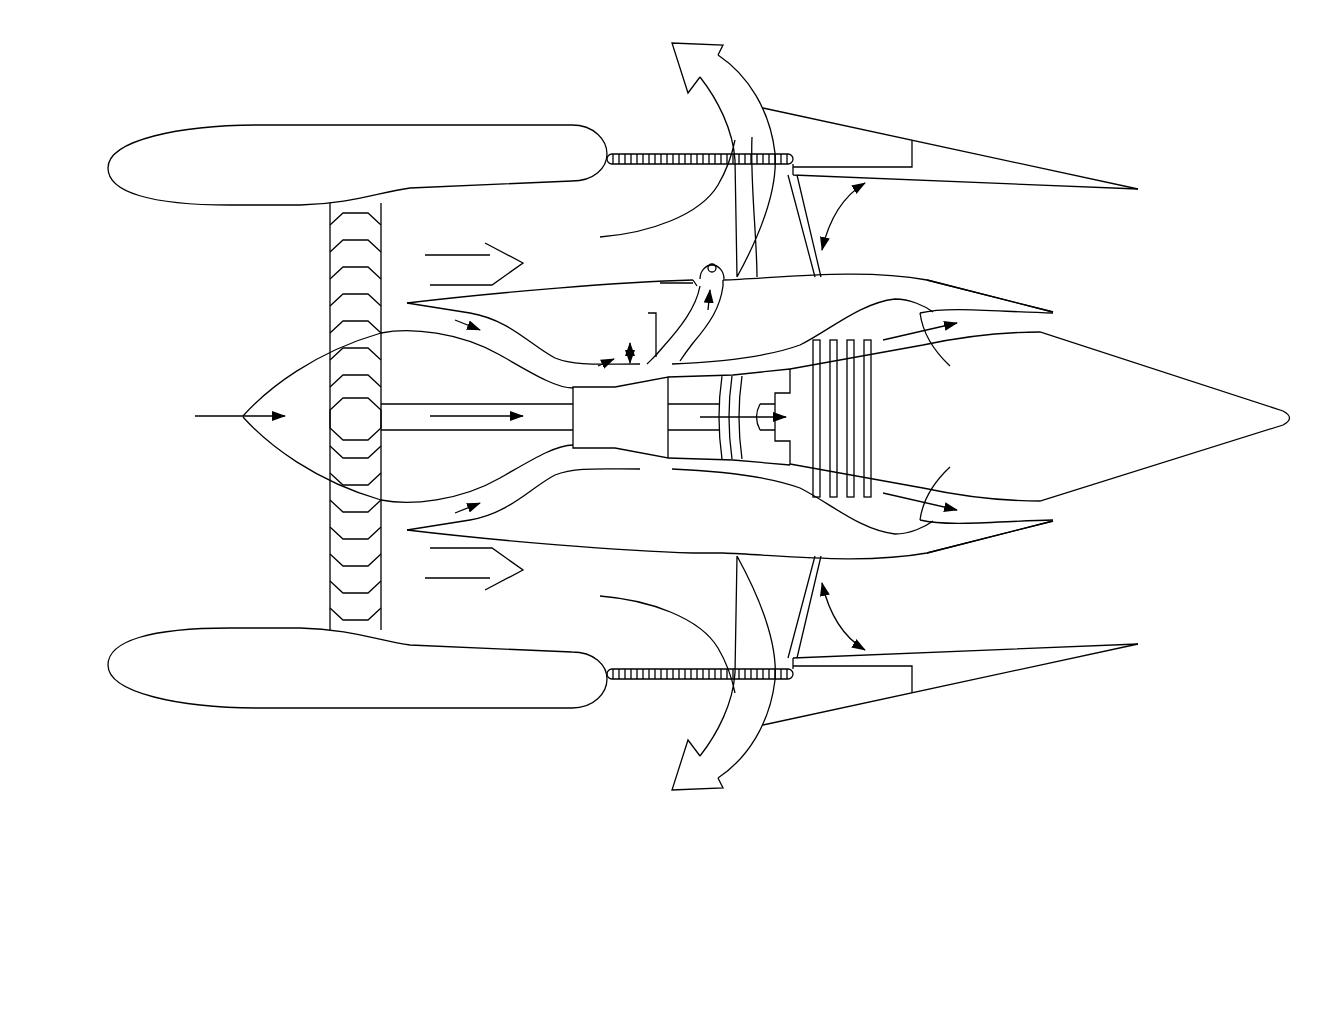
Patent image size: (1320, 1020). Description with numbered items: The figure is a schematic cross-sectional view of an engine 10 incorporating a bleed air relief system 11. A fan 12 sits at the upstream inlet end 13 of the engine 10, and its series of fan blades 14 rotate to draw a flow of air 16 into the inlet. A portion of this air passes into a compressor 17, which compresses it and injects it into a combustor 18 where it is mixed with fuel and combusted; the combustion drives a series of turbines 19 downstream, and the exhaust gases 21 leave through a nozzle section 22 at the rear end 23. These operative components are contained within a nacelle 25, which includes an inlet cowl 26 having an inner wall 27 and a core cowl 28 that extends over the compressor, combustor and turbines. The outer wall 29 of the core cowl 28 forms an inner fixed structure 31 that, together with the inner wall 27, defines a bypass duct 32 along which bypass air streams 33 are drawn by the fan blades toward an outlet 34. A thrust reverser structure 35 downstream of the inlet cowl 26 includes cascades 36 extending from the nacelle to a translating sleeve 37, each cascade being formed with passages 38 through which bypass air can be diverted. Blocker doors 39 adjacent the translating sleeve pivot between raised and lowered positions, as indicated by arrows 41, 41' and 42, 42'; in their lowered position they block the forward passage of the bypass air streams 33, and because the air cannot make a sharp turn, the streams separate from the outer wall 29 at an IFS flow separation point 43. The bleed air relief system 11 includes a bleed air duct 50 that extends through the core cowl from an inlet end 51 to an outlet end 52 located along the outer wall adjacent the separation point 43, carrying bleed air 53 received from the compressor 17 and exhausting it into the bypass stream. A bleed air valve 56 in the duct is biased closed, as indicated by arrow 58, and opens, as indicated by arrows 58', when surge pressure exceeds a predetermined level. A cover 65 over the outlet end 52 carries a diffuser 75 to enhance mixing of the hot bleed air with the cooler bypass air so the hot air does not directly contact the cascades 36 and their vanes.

The engine 10 is at (493, 80).
The bleed air relief system 11 is at (605, 351).
The fan 12 is at (320, 261).
The inlet end 13 is at (224, 572).
The fan blades 14 is at (352, 557).
The flow of air 16 is at (238, 398).
The compressor 17 is at (566, 438).
The combustor 18 is at (724, 460).
The turbines 19 is at (872, 445).
The exhaust gases 21 is at (950, 366).
The nozzle section 22 is at (1095, 420).
The rear end 23 is at (1033, 320).
The nacelle 25 is at (270, 148).
The inlet cowl 26 is at (357, 422).
The inner wall 27 is at (445, 189).
The core cowl 28 is at (930, 289).
The outer wall 29 is at (541, 290).
The inner fixed structure 31 is at (660, 284).
The bypass duct 32 is at (574, 208).
The bypass air streams 33 is at (732, 88).
The outlet 34 is at (1040, 416).
The thrust reverser structure 35 is at (782, 98).
The cascades 36 is at (664, 431).
The translating sleeve 37 is at (950, 427).
The passages 38 is at (681, 152).
The blocker doors 39 is at (808, 212).
The blocker door pivot arrow 41 is at (884, 227).
The blocker door pivot arrow 41' is at (885, 255).
The blocker door pivot arrow 42 is at (891, 607).
The blocker door pivot arrow 42' is at (887, 578).
The IFS flow separation point 43 is at (694, 367).
The bleed air duct 50 is at (717, 325).
The inlet end 51 is at (684, 358).
The outlet end 52 is at (740, 285).
The bleed air 53 is at (718, 308).
The bleed air valve 56 is at (636, 330).
The closing direction arrow 58 is at (595, 338).
The opening direction arrows 58' is at (584, 371).
The cover 65 is at (697, 256).
The diffuser 75 is at (716, 228).